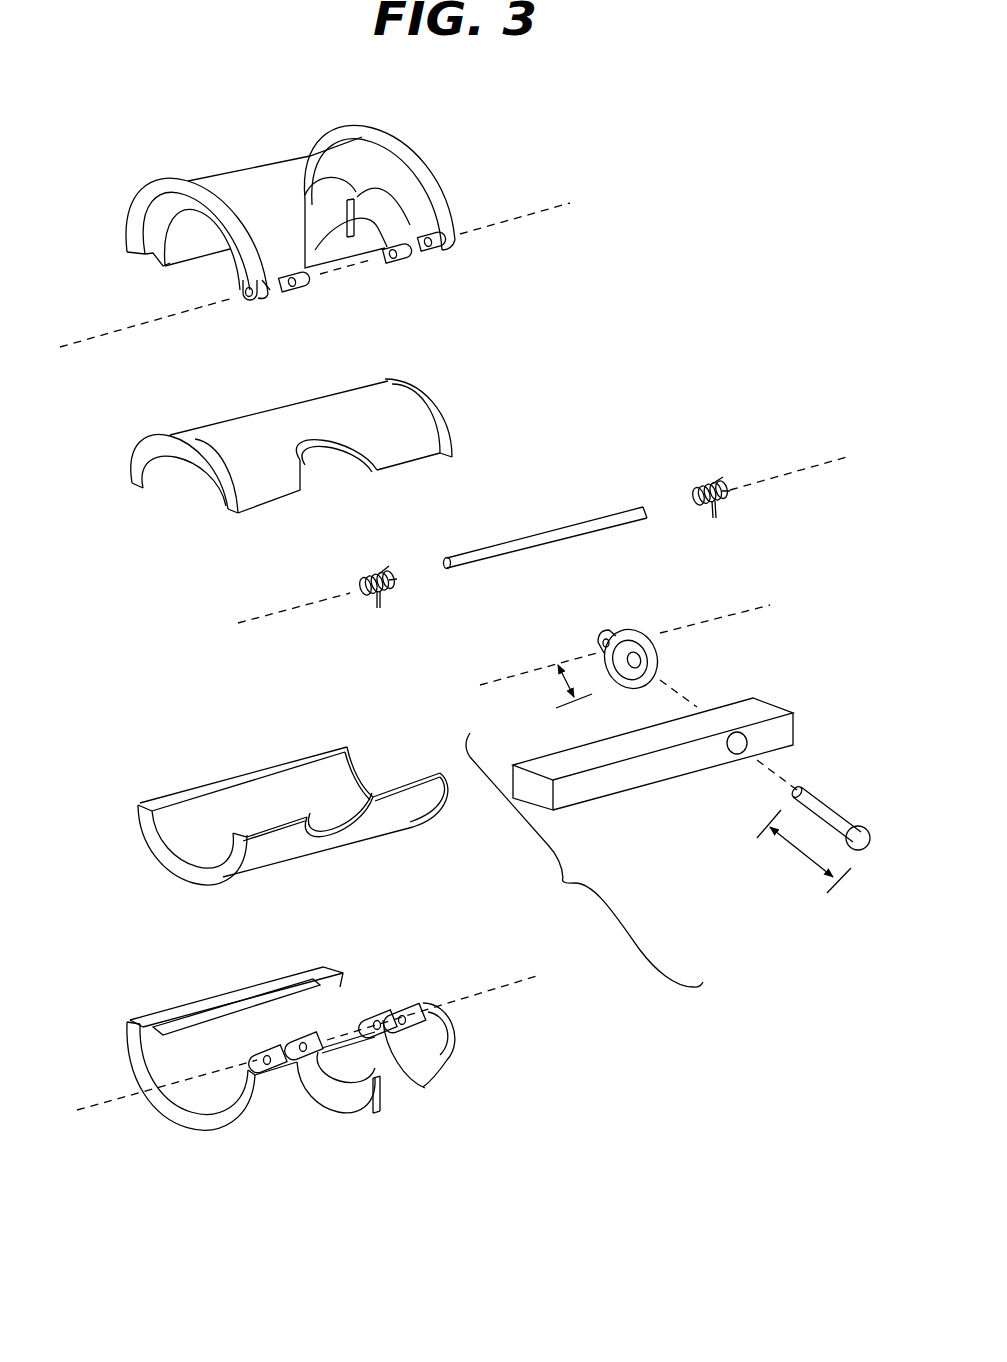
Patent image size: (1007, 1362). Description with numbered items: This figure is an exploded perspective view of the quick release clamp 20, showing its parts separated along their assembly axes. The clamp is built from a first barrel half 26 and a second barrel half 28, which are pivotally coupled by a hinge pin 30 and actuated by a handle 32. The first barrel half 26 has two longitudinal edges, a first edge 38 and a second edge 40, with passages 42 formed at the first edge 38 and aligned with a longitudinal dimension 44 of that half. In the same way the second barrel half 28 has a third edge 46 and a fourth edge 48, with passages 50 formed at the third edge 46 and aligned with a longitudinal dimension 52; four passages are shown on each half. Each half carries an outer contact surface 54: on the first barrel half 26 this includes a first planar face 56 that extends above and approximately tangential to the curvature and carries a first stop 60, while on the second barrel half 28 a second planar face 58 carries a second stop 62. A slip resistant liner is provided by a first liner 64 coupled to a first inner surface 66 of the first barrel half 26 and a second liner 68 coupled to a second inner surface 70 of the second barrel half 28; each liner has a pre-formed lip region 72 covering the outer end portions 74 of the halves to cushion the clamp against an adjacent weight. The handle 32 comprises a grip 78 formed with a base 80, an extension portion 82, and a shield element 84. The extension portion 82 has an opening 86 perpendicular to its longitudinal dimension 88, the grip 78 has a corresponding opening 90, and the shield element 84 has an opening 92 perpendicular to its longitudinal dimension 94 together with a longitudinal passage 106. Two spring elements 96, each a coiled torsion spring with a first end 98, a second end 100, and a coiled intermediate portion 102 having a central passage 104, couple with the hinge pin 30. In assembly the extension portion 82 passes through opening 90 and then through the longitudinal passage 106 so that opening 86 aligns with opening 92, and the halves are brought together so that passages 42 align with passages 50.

The quick release clamp 20 is at (668, 1173).
The first barrel half 26 is at (308, 222).
The second barrel half 28 is at (263, 1083).
The hinge pin 30 is at (563, 533).
The handle 32 is at (553, 883).
The first edge 38 is at (267, 297).
The second edge 40 is at (133, 243).
The passages 42 is at (240, 294).
The longitudinal dimension 44 is at (560, 207).
The third edge 46 is at (256, 1070).
The fourth edge 48 is at (140, 1023).
The passages 50 is at (263, 1065).
The longitudinal dimension 52 is at (540, 977).
The outer contact surface 54 is at (338, 215).
The first planar face 56 is at (323, 235).
The second planar face 58 is at (360, 1113).
The first stop 60 is at (318, 253).
The second stop 62 is at (370, 1120).
The first liner 64 is at (292, 628).
The first inner surface 66 is at (183, 253).
The second liner 68 is at (200, 813).
The second inner surface 70 is at (160, 1060).
The lip region 72 is at (153, 453).
The outer end portions 74 is at (157, 217).
The grip 78 is at (583, 787).
The base 80 is at (670, 749).
The extension portion 82 is at (805, 843).
The shield element 84 is at (625, 655).
The opening 86 is at (793, 792).
The longitudinal dimension 88 is at (810, 870).
The opening 90 is at (760, 757).
The opening 92 is at (597, 643).
The longitudinal dimension 94 is at (560, 683).
The spring elements 96 is at (542, 544).
The first end 98 is at (721, 479).
The second end 100 is at (717, 513).
The coiled intermediate portion 102 is at (730, 492).
The central passage 104 is at (694, 503).
The longitudinal passage 106 is at (639, 663).